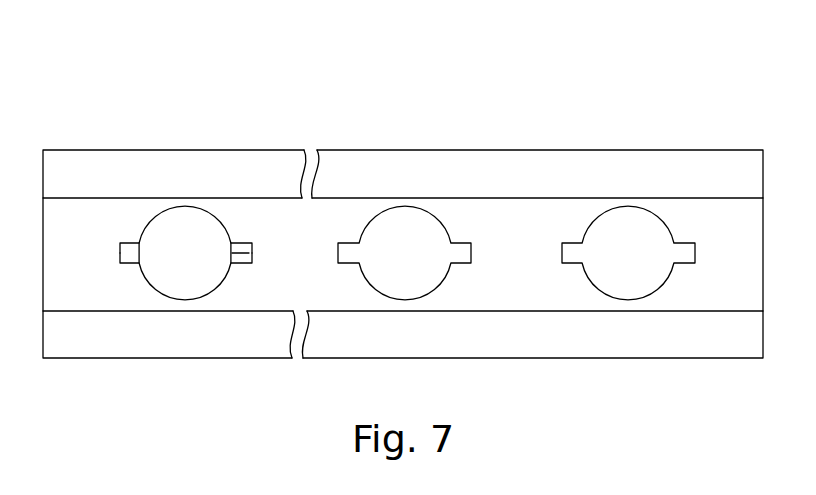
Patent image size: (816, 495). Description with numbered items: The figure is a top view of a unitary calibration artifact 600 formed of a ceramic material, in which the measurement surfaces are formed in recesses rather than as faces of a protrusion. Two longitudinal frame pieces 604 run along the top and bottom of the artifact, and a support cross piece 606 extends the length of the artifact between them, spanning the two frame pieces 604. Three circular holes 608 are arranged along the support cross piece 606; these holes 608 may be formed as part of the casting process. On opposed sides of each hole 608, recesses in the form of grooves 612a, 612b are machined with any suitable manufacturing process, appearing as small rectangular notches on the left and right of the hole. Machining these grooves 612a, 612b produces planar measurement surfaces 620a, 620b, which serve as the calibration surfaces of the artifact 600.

The unitary calibration artifact 600 is at (117, 77).
The longitudinal frame pieces 604 is at (487, 170).
The support cross piece 606 is at (538, 240).
The holes 608 is at (168, 208).
The groove 612a is at (133, 247).
The groove 612b is at (240, 248).
The planar measurement surface 620a is at (117, 252).
The planar measurement surface 620b is at (237, 258).